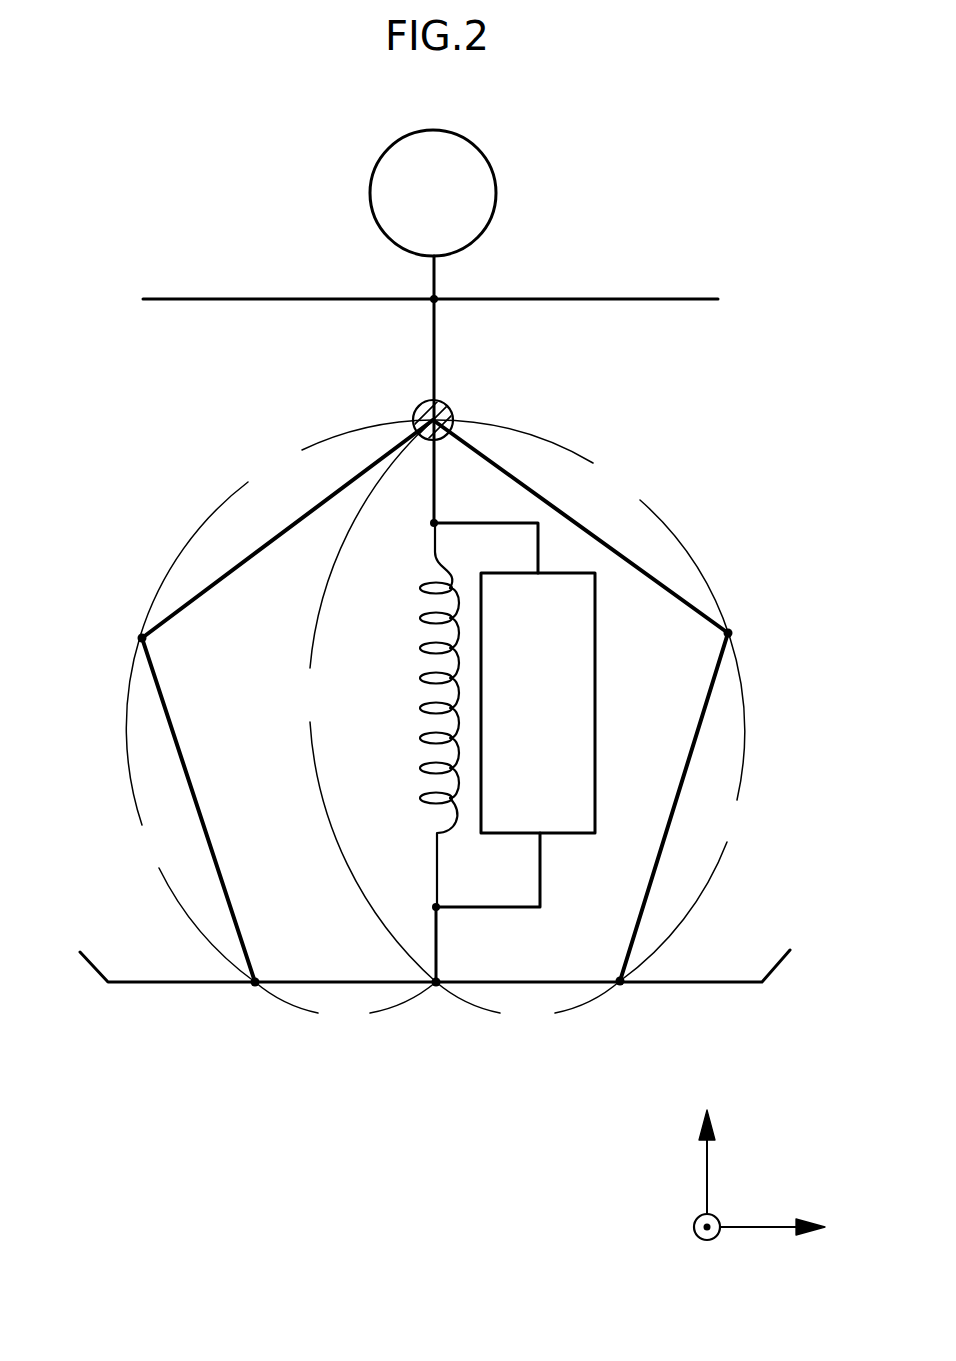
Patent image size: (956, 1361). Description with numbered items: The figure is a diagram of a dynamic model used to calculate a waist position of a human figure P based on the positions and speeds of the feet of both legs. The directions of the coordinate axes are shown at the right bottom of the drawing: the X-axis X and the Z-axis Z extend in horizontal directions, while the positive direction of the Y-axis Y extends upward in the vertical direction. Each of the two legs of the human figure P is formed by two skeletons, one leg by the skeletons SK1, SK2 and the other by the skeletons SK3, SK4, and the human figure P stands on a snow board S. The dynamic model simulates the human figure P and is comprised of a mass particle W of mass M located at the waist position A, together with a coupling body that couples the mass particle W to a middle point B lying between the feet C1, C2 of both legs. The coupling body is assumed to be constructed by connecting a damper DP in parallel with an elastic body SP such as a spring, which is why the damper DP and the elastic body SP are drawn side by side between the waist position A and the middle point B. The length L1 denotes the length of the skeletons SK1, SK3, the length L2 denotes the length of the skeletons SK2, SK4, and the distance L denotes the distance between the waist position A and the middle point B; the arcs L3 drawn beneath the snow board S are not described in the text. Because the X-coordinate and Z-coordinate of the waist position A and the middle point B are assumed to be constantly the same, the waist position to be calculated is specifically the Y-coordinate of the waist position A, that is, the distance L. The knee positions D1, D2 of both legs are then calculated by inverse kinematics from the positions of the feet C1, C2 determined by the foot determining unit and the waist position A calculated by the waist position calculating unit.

The human figure P is at (583, 247).
The waist position A is at (437, 402).
The mass particle W is at (417, 418).
The skeleton SK1 is at (618, 555).
The skeleton SK2 is at (690, 757).
The skeleton SK3 is at (220, 575).
The skeleton SK4 is at (185, 778).
The knee position D1 is at (730, 633).
The knee position D2 is at (142, 638).
The foot C1 is at (620, 982).
The foot C2 is at (255, 983).
The middle point B is at (436, 983).
The snow board S is at (732, 983).
The elastic body SP is at (430, 678).
The damper DP is at (598, 654).
The length of skeletons SK1, SK3 L1 is at (435, 622).
The length of skeletons SK2, SK4 L2 is at (440, 894).
The link length L3 arc L3 is at (437, 1007).
The distance between waist position and middle point L is at (369, 701).
The X-axis X is at (783, 1227).
The Y-axis Y is at (705, 1147).
The Z-axis Z is at (691, 1227).